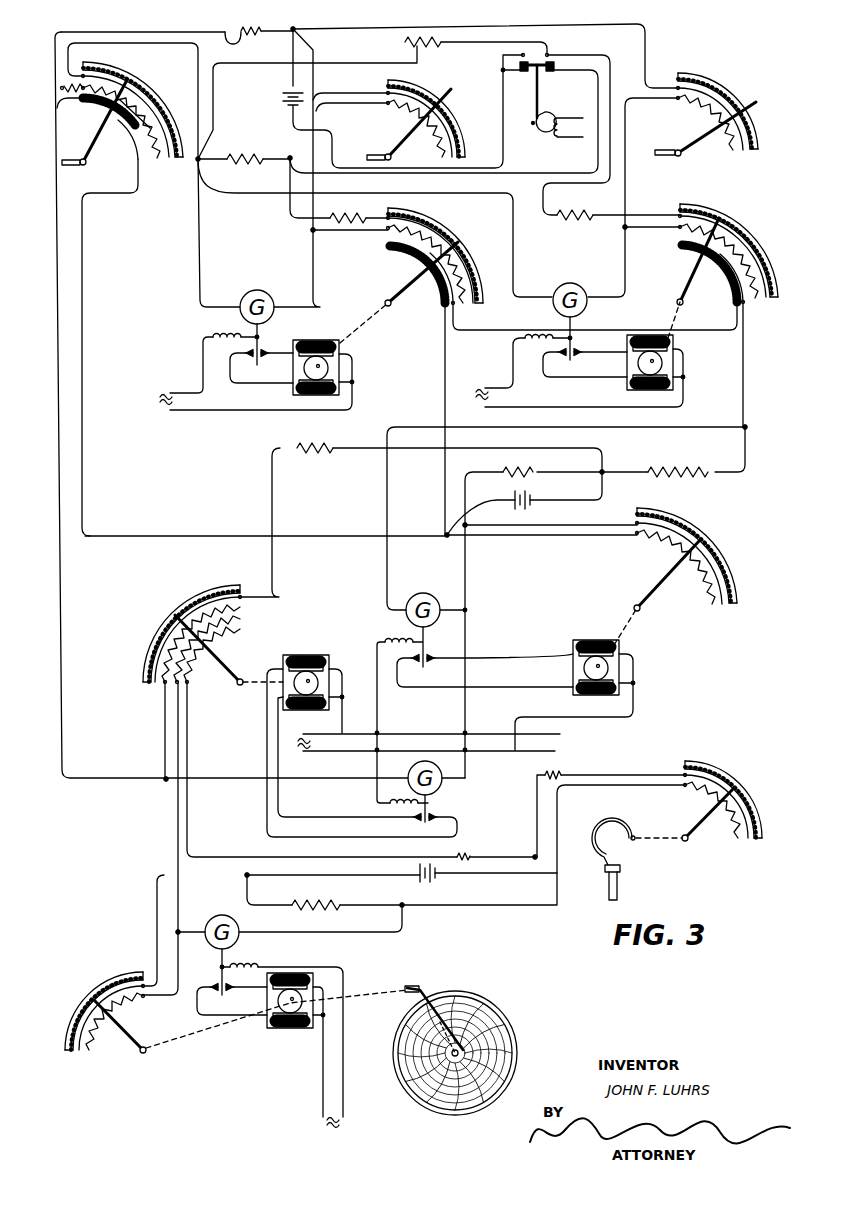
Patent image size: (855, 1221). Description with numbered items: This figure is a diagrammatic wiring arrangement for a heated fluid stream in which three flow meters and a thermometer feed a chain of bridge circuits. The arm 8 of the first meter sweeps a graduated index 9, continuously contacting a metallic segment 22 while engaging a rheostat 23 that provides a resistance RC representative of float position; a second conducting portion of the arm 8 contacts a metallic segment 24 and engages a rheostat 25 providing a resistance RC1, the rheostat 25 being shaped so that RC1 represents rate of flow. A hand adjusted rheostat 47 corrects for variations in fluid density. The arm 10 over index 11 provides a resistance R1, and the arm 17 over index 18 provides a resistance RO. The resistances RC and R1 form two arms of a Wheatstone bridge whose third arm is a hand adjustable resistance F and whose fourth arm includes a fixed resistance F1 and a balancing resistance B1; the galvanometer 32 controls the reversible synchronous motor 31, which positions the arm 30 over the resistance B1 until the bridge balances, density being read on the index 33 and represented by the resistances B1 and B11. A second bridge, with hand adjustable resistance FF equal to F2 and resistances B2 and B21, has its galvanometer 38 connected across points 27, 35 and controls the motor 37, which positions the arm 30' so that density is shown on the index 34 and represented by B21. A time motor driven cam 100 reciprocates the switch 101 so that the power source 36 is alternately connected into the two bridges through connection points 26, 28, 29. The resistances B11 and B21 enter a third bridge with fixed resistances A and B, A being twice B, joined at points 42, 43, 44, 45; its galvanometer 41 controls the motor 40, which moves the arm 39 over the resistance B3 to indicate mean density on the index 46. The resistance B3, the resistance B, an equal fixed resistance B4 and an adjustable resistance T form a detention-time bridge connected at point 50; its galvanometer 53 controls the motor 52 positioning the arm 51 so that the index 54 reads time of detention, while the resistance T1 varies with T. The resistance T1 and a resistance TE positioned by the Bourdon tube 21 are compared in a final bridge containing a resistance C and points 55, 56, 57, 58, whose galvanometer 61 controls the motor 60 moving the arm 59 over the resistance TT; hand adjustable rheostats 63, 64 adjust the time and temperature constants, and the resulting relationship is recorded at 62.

The relative-humidity indicator scale 9 is at (148, 84).
The metallic segment 22 is at (170, 162).
The rheostat 23 is at (157, 165).
The resistance RC1 is at (145, 150).
The rheostat 25 is at (85, 105).
The metallic segment 24 is at (139, 162).
The arm 8 is at (98, 128).
The resistance RC is at (61, 89).
The hand adjusted rheostat 47 is at (259, 27).
The junction 28 is at (293, 21).
The power source 36 is at (404, 98).
The point 27 is at (211, 153).
The hand adjustable resistance F is at (249, 162).
The junction 26 is at (299, 158).
The hand adjustable resistance FF is at (476, 52).
The switch 101 is at (531, 90).
The time motor driven cam 100 is at (553, 134).
The indicator scale 11 is at (448, 108).
The resistance R1 is at (410, 112).
The arm 10 is at (419, 130).
The indicator scale 18 is at (729, 91).
The resistance RO is at (715, 114).
The arm 17 is at (710, 134).
The fixed resistance F1 is at (348, 208).
The junction 29 is at (304, 232).
The index 33 is at (478, 250).
The balancing resistance B1 is at (386, 235).
The resistance B11 is at (438, 292).
The arm 30 is at (421, 275).
The galvanometer 32 is at (259, 293).
The reversible synchronous motor 31 is at (293, 340).
The resistance F2 is at (575, 206).
The point 35 is at (616, 228).
The index 34 is at (755, 236).
The resistance B2 is at (677, 230).
The resistance B21 is at (722, 270).
The pointer 30' is at (687, 261).
The galvanometer 38 is at (575, 284).
The motor 37 is at (675, 345).
The fixed resistance B4 is at (315, 439).
The junction 42 is at (755, 427).
The fixed resistance B is at (518, 463).
The fixed resistance A is at (678, 462).
The battery junction 44 is at (568, 489).
The junction 43 is at (475, 519).
The junction 45 is at (446, 544).
The index 46 is at (716, 546).
The adjustable resistance B3 is at (678, 550).
The arm 39 is at (668, 578).
The galvanometer 41 is at (425, 594).
The motor 40 is at (575, 640).
The adjustable resistance T is at (156, 686).
The resistance T1 is at (200, 660).
The index 54 is at (166, 613).
The arm 51 is at (232, 655).
The motor 52 is at (285, 655).
The junction 50 is at (161, 787).
The galvanometer 53 is at (442, 786).
The hand adjustable rheostat 64 is at (546, 774).
The hand adjustable rheostat 63 is at (469, 856).
The junction 58 is at (527, 849).
The resistance TE is at (712, 800).
The Bourdon tube 21 is at (603, 821).
The junction 55 is at (338, 870).
The resistor C is at (316, 895).
The junction 57 is at (406, 897).
The galvanometer 61 is at (222, 914).
The junction 56 is at (170, 932).
The resistance TT is at (112, 1012).
The arm 59 is at (128, 1036).
The motor 60 is at (278, 1032).
The recorder 62 is at (473, 996).